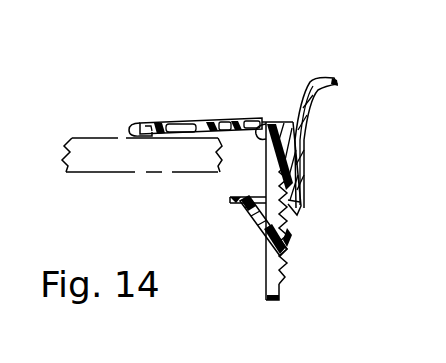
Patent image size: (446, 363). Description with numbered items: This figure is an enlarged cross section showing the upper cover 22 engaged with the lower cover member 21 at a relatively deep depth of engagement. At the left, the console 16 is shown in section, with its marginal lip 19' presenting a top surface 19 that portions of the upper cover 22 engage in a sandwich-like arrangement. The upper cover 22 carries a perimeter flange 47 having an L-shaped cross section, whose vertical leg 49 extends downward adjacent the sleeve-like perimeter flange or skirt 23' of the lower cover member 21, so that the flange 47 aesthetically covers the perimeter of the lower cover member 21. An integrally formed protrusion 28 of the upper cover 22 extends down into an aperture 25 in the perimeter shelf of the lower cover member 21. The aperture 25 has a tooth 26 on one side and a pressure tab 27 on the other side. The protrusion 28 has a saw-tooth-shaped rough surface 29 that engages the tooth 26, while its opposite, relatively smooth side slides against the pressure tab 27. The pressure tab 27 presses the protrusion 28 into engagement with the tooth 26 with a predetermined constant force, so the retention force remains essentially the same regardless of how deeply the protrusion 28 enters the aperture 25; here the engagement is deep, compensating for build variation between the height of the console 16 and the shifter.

The console 16 is at (96, 174).
The top surface 19 is at (86, 122).
The marginal lip 19' is at (171, 184).
The lower cover member 21 is at (350, 117).
The upper cover 22 is at (167, 104).
The perimeter flange or skirt 23' is at (331, 143).
The aperture 25 is at (252, 197).
The tooth 26 is at (300, 202).
The pressure tab 27 is at (250, 228).
The protrusion 28 is at (274, 300).
The saw-tooth-shaped rough surface 29 is at (283, 240).
The perimeter flange 47 is at (214, 121).
The vertical leg 49 is at (259, 120).